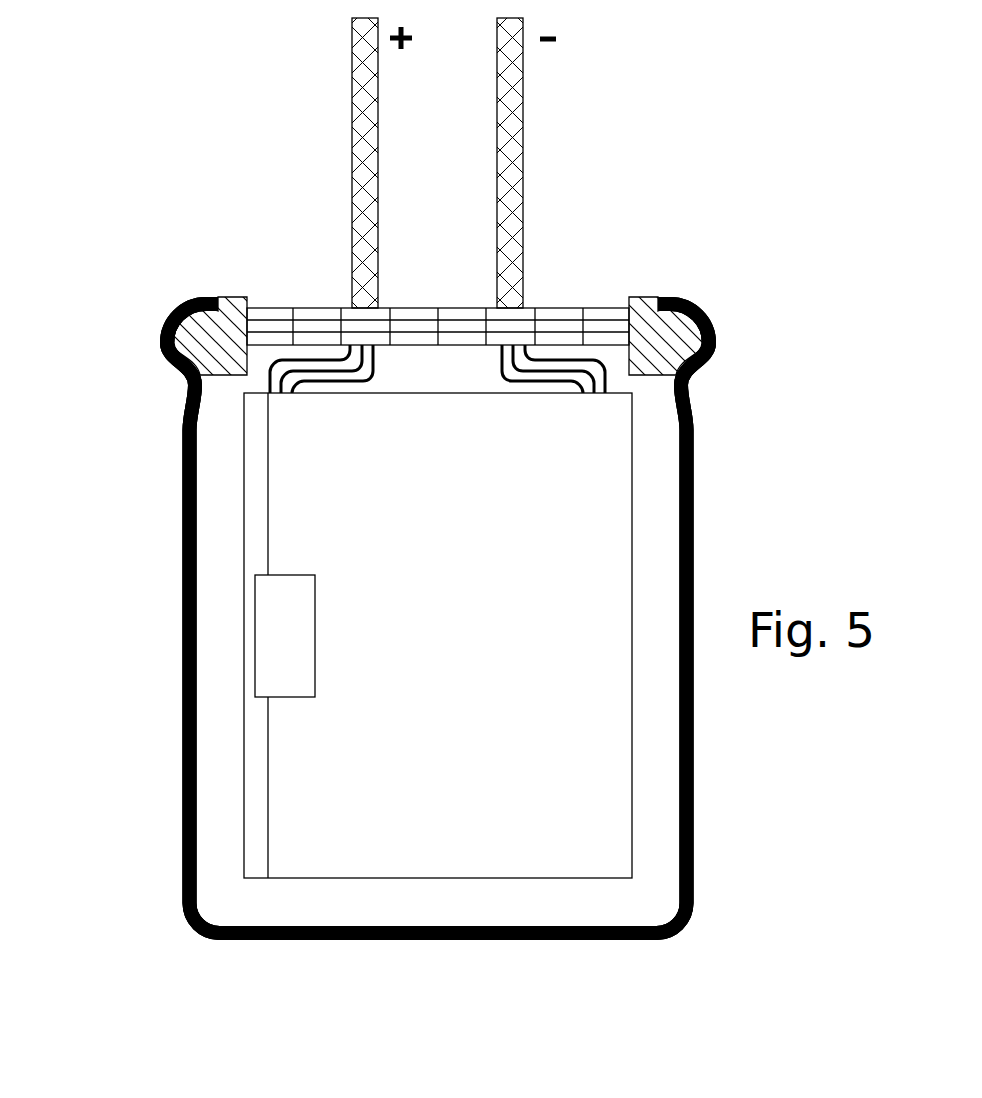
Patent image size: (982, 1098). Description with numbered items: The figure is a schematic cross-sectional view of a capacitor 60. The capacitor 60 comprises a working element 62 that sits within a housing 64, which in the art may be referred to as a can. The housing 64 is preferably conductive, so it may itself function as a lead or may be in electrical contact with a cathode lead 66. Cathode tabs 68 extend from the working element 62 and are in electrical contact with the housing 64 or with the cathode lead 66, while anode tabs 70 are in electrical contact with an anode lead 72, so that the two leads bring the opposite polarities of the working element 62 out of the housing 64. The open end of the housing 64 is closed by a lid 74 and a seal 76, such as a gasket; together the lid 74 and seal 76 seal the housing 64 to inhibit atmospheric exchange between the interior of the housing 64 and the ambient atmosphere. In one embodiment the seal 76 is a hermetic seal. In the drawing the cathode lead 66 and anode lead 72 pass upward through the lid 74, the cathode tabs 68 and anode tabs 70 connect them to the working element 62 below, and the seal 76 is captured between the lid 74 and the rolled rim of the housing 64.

The capacitor 60 is at (705, 562).
The working element 62 is at (323, 808).
The housing 64 is at (192, 510).
The cathode lead 66 is at (510, 122).
The cathode tabs 68 is at (578, 367).
The anode tabs 70 is at (357, 370).
The anode lead 72 is at (365, 122).
The lid 74 is at (418, 317).
The seal 76 is at (675, 342).